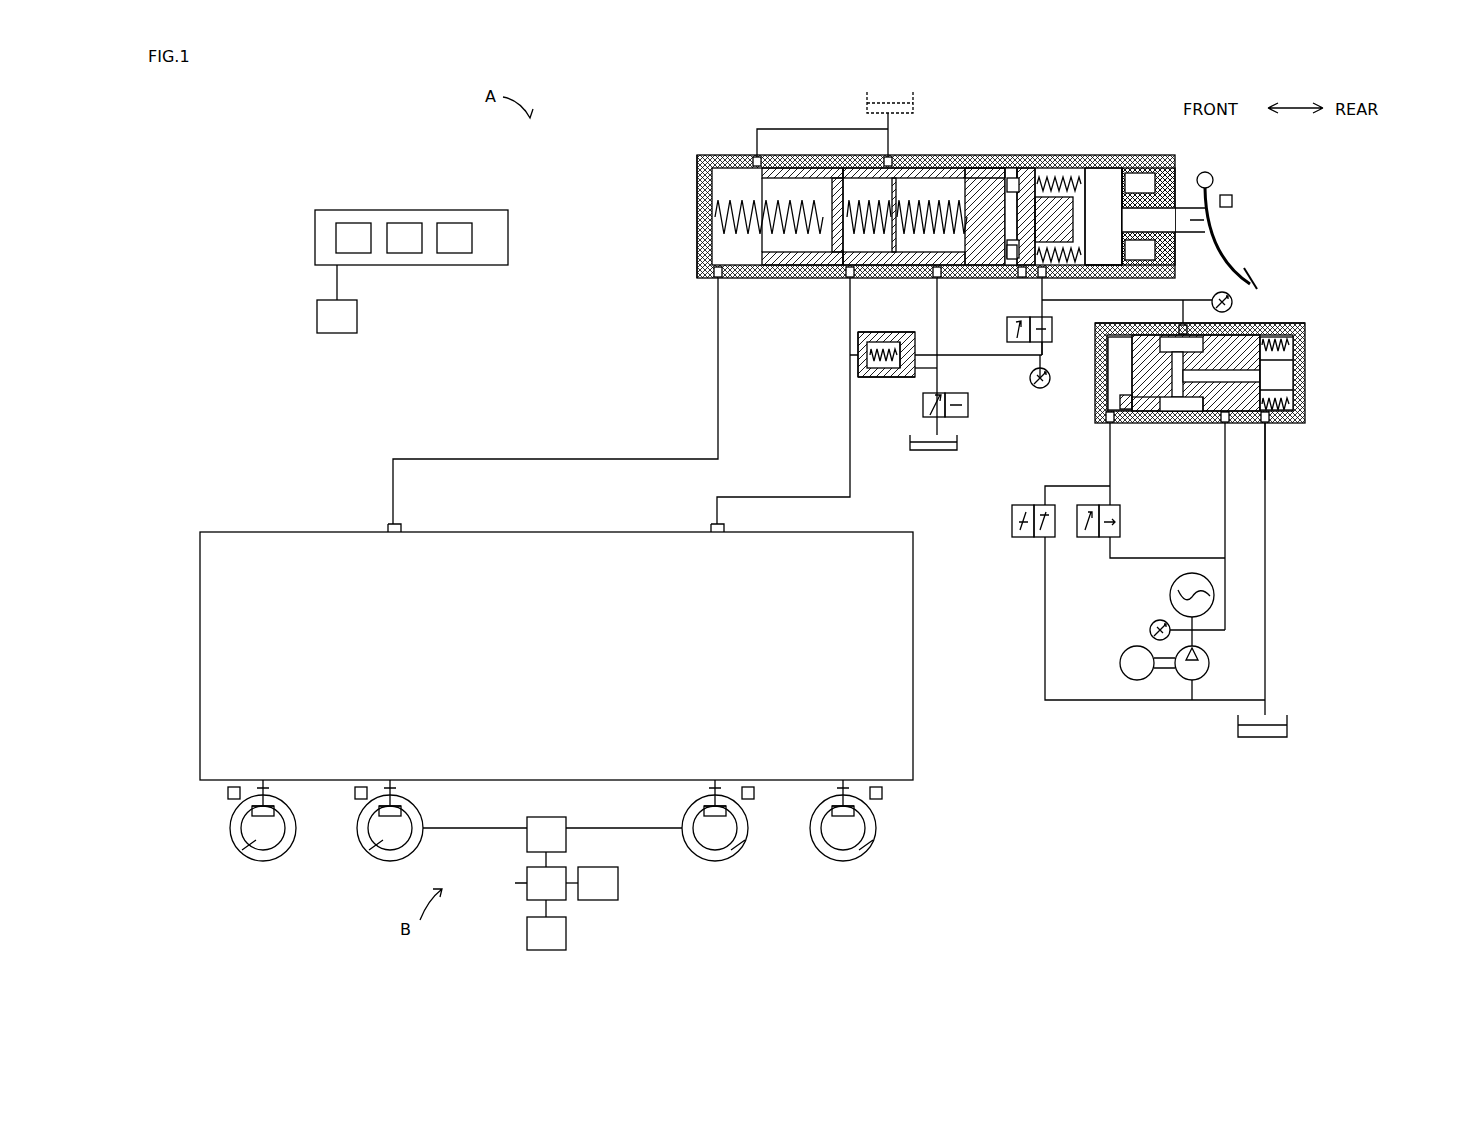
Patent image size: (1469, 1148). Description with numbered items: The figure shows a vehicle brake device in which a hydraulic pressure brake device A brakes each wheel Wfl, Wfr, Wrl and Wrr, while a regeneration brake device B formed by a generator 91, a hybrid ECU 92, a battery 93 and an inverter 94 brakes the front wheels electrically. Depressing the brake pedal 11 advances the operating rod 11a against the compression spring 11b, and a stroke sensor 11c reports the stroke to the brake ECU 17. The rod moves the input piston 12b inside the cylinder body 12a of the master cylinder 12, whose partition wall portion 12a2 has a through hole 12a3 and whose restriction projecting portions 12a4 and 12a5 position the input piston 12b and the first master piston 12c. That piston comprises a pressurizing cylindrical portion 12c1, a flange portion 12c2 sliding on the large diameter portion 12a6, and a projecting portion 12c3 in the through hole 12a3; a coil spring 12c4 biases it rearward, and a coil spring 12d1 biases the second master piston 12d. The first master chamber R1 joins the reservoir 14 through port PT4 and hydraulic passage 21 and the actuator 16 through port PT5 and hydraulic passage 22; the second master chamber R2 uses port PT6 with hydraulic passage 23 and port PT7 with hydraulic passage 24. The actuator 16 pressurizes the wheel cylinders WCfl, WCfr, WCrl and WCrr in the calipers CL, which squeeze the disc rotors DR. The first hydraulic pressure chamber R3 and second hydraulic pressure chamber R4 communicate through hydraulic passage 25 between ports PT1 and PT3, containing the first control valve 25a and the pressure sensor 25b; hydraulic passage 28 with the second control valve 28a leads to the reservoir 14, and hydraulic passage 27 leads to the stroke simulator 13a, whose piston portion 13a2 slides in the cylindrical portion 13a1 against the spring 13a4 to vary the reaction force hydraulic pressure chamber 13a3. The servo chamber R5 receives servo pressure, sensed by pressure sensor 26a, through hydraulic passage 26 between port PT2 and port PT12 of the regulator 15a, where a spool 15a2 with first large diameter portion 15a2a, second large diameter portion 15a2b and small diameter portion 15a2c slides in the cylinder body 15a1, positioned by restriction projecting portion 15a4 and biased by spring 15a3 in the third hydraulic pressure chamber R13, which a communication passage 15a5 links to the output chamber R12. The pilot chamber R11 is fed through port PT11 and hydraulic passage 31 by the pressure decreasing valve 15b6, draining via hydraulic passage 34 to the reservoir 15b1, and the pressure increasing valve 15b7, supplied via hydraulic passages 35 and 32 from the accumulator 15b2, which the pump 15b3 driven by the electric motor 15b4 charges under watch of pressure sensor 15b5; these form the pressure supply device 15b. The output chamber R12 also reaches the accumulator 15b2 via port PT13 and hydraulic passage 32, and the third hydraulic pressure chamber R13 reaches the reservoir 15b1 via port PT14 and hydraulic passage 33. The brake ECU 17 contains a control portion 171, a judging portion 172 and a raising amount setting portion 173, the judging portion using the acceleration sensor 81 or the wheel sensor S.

The brake pedal 11 is at (1222, 247).
The operating rod 11a is at (1215, 216).
The compression spring 11b is at (1058, 178).
The stroke sensor 11c is at (1233, 199).
The master cylinder 12 is at (889, 198).
The cylinder body 12a is at (700, 207).
The partition wall portion 12a2 is at (1026, 168).
The through hole 12a3 is at (1040, 168).
The restriction projecting portion 12a4 is at (1150, 170).
The restriction projecting portion 12a5 is at (1020, 168).
The large diameter portion 12a6 is at (975, 168).
The input piston 12b is at (1108, 185).
The first master piston 12c is at (900, 265).
The pressurizing cylindrical portion 12c1 is at (950, 165).
The flange portion 12c2 is at (1008, 178).
The projecting portion 12c3 is at (1092, 165).
The coil spring 12c4 is at (888, 296).
The second master piston 12d is at (790, 262).
The coil spring 12d1 is at (766, 262).
The stroke simulator 13a is at (886, 383).
The cylindrical portion 13a1 is at (860, 362).
The piston portion 13a2 is at (880, 377).
The reaction force hydraulic pressure chamber 13a3 is at (868, 337).
The spring 13a4 is at (862, 350).
The reservoir 14 is at (866, 103).
The regulator 15a is at (1227, 397).
The cylinder body 15a1 is at (1305, 382).
The spool 15a2 is at (1305, 340).
The first large diameter portion 15a2a is at (1262, 420).
The second large diameter portion 15a2b is at (1148, 405).
The small diameter portion 15a2c is at (1205, 425).
The spring 15a3 is at (1285, 323).
The restriction projecting portion 15a4 is at (1124, 408).
The communication passage 15a5 is at (1305, 365).
The pressure supply device 15b is at (1177, 580).
The reservoir 15b1 is at (1290, 725).
The accumulator 15b2 is at (1170, 593).
The pump 15b3 is at (1208, 665).
The electric motor 15b4 is at (1120, 663).
The pressure sensor 15b5 is at (1150, 630).
The pressure decreasing valve 15b6 is at (1028, 538).
The pressure increasing valve 15b7 is at (1090, 538).
The actuator 16 is at (828, 532).
The brake ECU 17 is at (400, 210).
The control portion 171 is at (348, 238).
The judging portion 172 is at (405, 243).
The raising amount setting portion 173 is at (458, 243).
The hydraulic passage 21 is at (887, 125).
The hydraulic passage 22 is at (785, 497).
The hydraulic passage 23 is at (785, 129).
The hydraulic passage 24 is at (545, 459).
The hydraulic passage 25 is at (1012, 365).
The first control valve 25a is at (1048, 350).
The pressure sensor 25b is at (1050, 370).
The hydraulic passage 26 is at (1172, 300).
The pressure sensor 26a is at (1233, 300).
The hydraulic passage 27 is at (921, 370).
The hydraulic passage 28 is at (940, 378).
The second control valve 28a is at (968, 412).
The hydraulic passage 31 is at (1105, 486).
The hydraulic passage 32 is at (1226, 550).
The hydraulic passage 33 is at (1266, 640).
The hydraulic passage 34 is at (1045, 613).
The hydraulic passage 35 is at (1160, 558).
The acceleration sensor 81 is at (328, 322).
The generator 91 is at (548, 828).
The hybrid ECU 92 is at (605, 885).
The battery 93 is at (540, 932).
The inverter 94 is at (530, 884).
The port PT1 is at (1044, 278).
The port PT2 is at (1012, 316).
The port PT3 is at (935, 280).
The port PT4 is at (884, 158).
The port PT5 is at (848, 278).
The port PT6 is at (752, 158).
The port PT7 is at (716, 278).
The port PT11 is at (1108, 422).
The port PT12 is at (1180, 325).
The port PT13 is at (1268, 470).
The port PT14 is at (1268, 422).
The first master chamber R1 is at (868, 265).
The second master chamber R2 is at (752, 265).
The first hydraulic pressure chamber R3 is at (1100, 245).
The second hydraulic pressure chamber R4 is at (1008, 262).
The servo chamber R5 is at (1020, 270).
The pilot chamber R11 is at (1108, 392).
The output chamber R12 is at (1195, 415).
The third hydraulic pressure chamber R13 is at (1300, 398).
The wheel Wrr is at (245, 852).
The wheel Wfl is at (372, 852).
The wheel Wfr is at (735, 852).
The wheel Wrl is at (866, 852).
The wheel cylinder WCrr is at (230, 826).
The wheel cylinder WCfl is at (357, 826).
The wheel cylinder WCfr is at (748, 830).
The wheel cylinder WCrl is at (886, 830).
The vehicle wheel sensor S is at (882, 792).
The caliper CL is at (858, 812).
The disc rotor DR is at (555, 843).